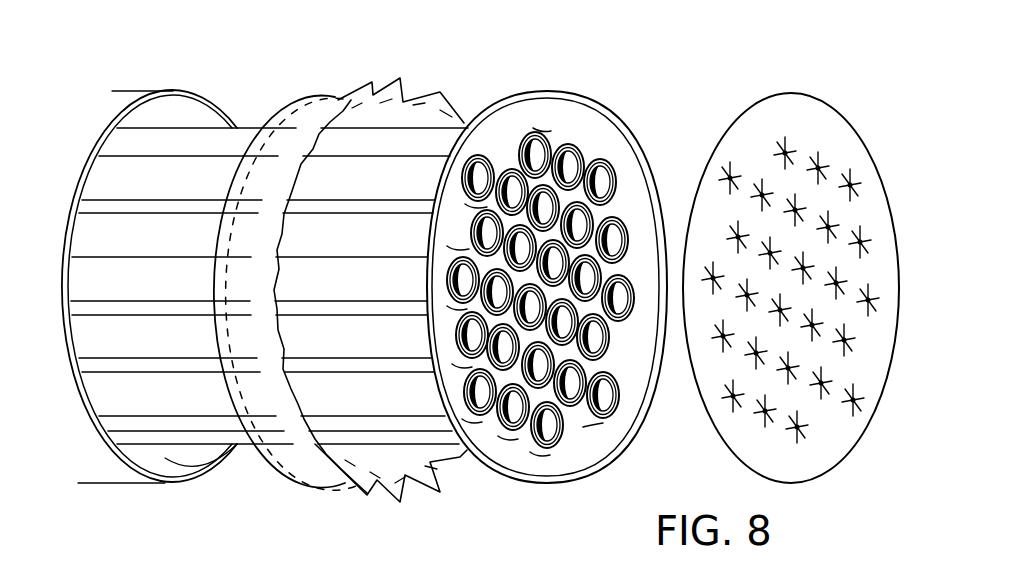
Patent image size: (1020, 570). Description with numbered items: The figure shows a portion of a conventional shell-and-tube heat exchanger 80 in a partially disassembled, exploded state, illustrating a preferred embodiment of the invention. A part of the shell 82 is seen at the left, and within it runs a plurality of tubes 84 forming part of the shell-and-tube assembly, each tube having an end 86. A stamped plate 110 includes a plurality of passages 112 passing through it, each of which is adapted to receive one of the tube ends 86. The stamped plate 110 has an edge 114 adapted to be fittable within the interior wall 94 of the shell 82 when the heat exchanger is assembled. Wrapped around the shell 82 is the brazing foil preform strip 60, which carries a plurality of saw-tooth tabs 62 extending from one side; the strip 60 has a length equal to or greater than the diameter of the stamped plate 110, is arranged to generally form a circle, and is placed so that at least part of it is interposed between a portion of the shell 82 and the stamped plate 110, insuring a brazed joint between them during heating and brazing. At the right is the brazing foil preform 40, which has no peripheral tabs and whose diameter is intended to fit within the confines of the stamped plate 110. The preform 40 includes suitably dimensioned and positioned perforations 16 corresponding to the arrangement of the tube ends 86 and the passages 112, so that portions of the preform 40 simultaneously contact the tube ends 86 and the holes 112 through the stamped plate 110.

The perforations 16 is at (863, 169).
The brazing foil preform 40 is at (851, 469).
The brazing foil preform strip 60 is at (318, 102).
The tabs 62 is at (386, 74).
The shell-and-tube heat exchanger 80 is at (196, 88).
The shell 82 is at (94, 463).
The tubes 84 is at (229, 170).
The tube end 86 is at (536, 122).
The interior wall 94 is at (166, 459).
The stamped plate 110 is at (553, 491).
The passages 112 is at (613, 151).
The edge 114 is at (482, 461).